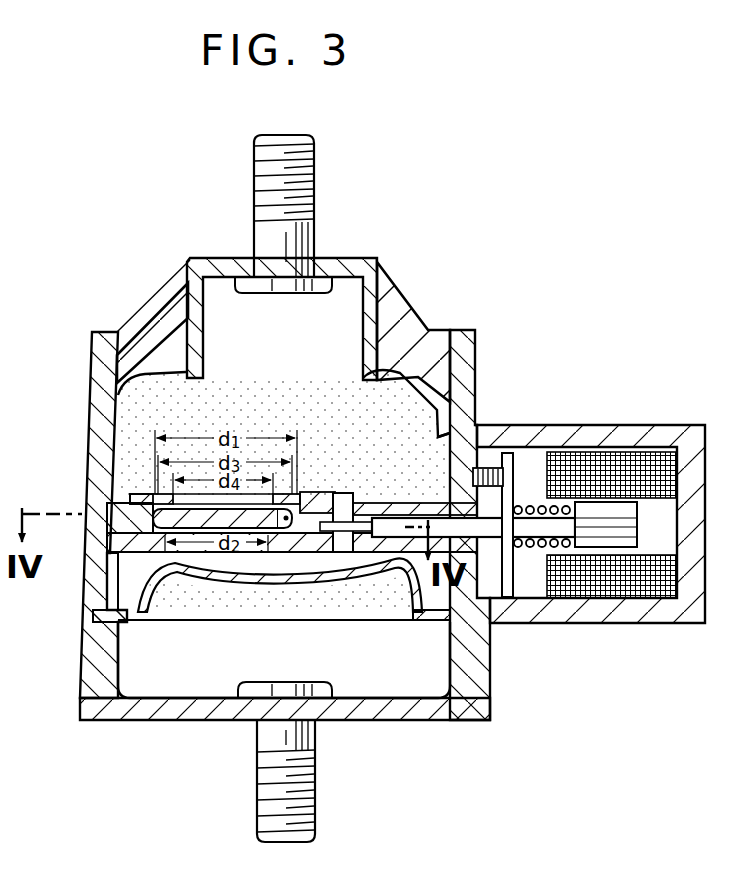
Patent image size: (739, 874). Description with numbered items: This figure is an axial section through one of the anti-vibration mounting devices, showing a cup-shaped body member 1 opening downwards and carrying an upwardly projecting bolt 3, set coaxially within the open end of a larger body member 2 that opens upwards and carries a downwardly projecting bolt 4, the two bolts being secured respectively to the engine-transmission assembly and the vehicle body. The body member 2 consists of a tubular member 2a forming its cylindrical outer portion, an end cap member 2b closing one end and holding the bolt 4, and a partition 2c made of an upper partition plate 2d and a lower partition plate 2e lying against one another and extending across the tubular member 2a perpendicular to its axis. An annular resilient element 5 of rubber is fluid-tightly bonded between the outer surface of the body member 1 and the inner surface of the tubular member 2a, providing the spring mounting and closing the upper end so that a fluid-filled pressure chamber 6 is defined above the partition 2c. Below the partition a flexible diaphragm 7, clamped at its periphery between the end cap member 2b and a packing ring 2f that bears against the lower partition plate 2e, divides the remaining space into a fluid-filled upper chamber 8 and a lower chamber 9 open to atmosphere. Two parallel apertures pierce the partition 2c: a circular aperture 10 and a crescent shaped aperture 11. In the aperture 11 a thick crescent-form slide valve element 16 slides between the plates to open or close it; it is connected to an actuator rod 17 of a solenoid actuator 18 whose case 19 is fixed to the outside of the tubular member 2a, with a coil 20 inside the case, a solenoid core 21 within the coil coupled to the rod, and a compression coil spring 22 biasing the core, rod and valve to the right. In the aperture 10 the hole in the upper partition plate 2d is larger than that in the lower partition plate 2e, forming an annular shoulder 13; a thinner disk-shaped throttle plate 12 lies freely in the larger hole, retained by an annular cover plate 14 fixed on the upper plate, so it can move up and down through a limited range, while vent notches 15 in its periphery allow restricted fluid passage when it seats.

The body member 1 is at (343, 264).
The body member 2 is at (262, 549).
The tubular member 2a is at (97, 438).
The end cap member 2b is at (160, 710).
The partition 2c is at (302, 492).
The upper partition plate 2d is at (88, 500).
The lower partition plate 2e is at (92, 548).
The packing ring 2f is at (84, 612).
The bolt 3 is at (307, 177).
The bolt 4 is at (312, 783).
The annular resilient element 5 is at (398, 303).
The pressure chamber 6 is at (405, 417).
The flexible diaphragm 7 is at (360, 572).
The upper chamber 8 is at (82, 588).
The lower chamber 9 is at (132, 660).
The circular aperture 10 is at (198, 576).
The crescent shaped aperture 11 is at (342, 502).
The throttle plate 12 is at (202, 512).
The annular shoulder 13 is at (265, 562).
The annular cover plate 14 is at (140, 496).
The vent notches 15 is at (279, 512).
The slide valve element 16 is at (347, 517).
The actuator rod 17 is at (520, 520).
The solenoid actuator 18 is at (656, 422).
The case 19 is at (612, 623).
The coil 20 is at (603, 452).
The solenoid core 21 is at (630, 514).
The compression coil spring 22 is at (528, 608).